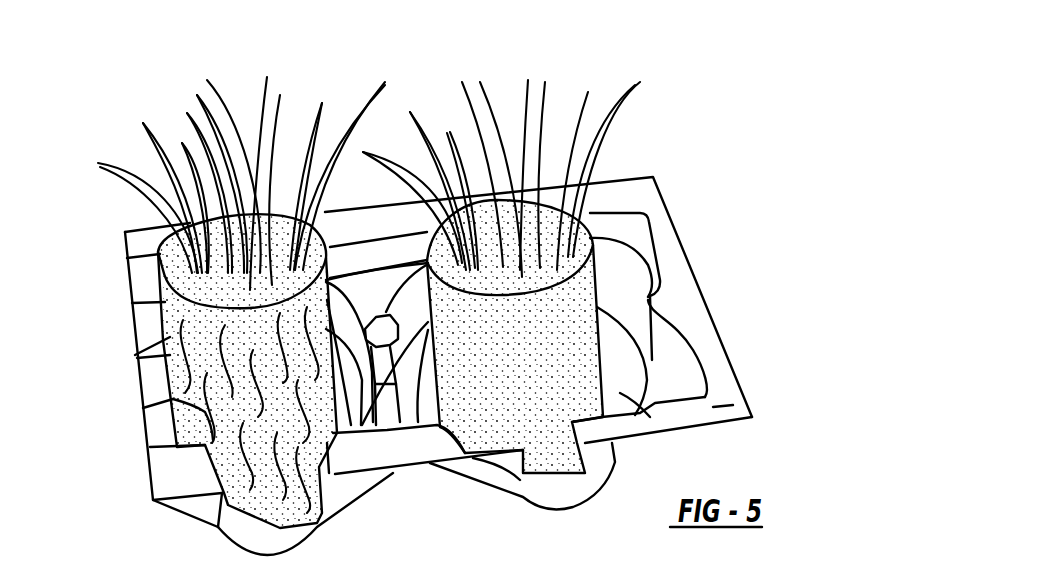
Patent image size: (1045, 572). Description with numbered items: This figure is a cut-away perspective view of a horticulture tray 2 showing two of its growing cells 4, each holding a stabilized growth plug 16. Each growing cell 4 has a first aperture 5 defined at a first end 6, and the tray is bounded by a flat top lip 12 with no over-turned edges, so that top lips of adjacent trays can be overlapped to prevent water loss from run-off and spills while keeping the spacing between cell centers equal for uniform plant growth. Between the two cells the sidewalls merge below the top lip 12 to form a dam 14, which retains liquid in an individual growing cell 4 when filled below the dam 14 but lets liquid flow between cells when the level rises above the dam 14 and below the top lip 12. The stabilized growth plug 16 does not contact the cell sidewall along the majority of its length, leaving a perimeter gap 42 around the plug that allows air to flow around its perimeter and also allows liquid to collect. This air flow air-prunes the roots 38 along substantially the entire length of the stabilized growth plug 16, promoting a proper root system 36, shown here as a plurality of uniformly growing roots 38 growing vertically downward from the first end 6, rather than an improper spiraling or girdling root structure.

The horticulture tray 2 is at (630, 158).
The growing cell 4 is at (623, 263).
The first aperture 5 is at (625, 362).
The first end 6 is at (687, 382).
The top lip 12 is at (713, 407).
The dam 14 is at (393, 413).
The stabilized growth plug 16 is at (550, 343).
The proper root system 36 is at (135, 360).
The roots 38 is at (143, 408).
The perimeter gap 42 is at (645, 405).